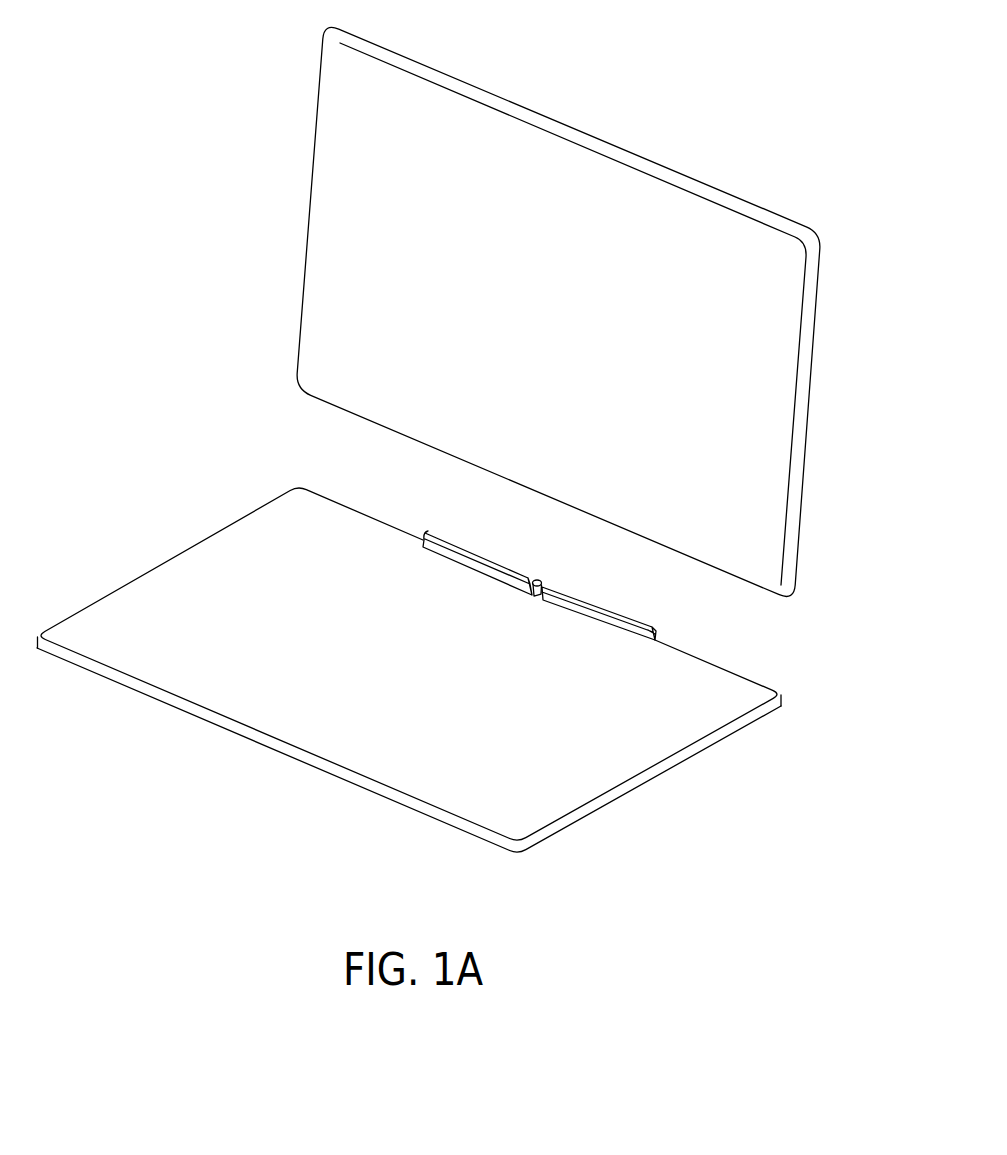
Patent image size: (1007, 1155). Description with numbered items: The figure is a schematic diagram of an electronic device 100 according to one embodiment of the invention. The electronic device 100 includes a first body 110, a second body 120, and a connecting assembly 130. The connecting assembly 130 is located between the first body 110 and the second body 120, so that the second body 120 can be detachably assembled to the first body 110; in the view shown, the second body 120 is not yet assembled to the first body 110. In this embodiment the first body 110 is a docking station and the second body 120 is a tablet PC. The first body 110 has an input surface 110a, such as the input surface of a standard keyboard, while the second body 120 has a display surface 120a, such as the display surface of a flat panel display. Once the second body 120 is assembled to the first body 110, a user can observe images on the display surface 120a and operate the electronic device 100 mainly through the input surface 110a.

The electronic device 100 is at (818, 896).
The first body 110 is at (414, 670).
The input surface 110a is at (697, 716).
The second body 120 is at (520, 311).
The display surface 120a is at (338, 150).
The connecting assembly 130 is at (660, 619).